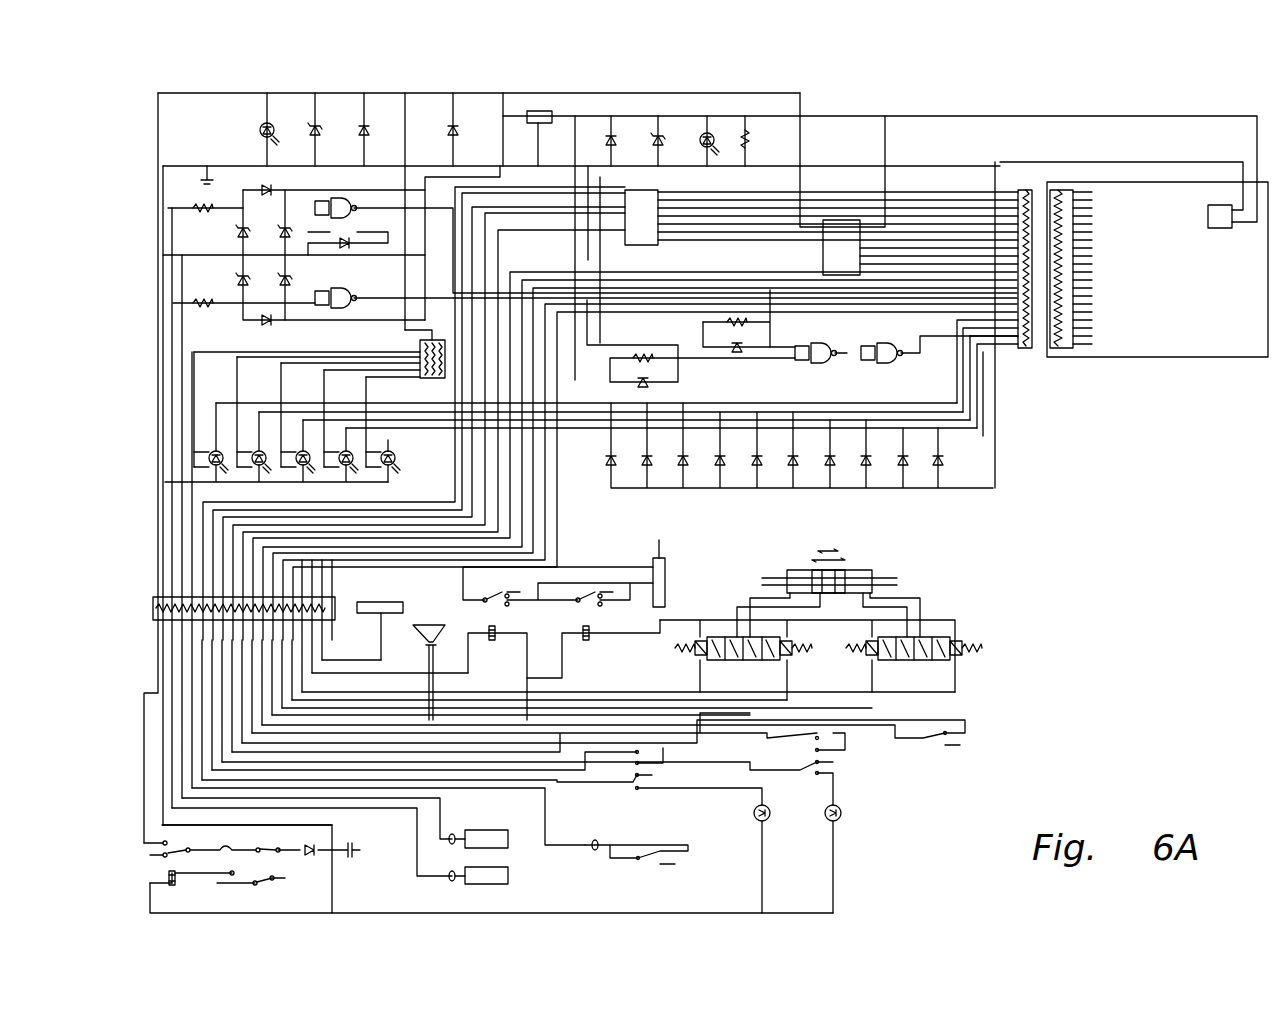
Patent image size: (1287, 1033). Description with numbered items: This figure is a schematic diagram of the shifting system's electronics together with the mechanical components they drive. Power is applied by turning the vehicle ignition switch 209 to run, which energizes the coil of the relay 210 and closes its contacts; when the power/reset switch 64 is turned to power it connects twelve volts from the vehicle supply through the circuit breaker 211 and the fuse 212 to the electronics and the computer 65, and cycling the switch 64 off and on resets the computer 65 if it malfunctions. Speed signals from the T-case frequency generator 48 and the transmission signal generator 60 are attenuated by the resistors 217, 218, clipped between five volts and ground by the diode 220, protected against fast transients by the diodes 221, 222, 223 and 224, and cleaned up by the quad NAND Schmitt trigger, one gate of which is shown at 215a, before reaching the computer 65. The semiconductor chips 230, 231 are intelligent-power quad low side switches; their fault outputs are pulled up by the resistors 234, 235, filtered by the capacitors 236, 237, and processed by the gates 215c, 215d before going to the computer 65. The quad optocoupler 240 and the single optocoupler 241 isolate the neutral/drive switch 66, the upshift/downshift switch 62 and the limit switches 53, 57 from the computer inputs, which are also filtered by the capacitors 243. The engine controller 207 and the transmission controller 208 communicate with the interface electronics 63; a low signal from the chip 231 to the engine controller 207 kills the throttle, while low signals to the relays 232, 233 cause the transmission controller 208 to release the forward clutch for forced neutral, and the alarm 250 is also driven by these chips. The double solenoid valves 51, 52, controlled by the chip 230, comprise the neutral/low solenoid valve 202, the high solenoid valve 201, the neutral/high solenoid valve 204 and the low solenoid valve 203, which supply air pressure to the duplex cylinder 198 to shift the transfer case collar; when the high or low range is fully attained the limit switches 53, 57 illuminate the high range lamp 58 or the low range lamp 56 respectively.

The fuse 212 is at (207, 93).
The semiconductor chip 230 is at (633, 190).
The semiconductor chip 231 is at (843, 220).
The computer 65 is at (1058, 178).
The resistor 217 is at (196, 208).
The diode 223 is at (238, 232).
The diode 222 is at (238, 280).
The resistor 218 is at (196, 303).
The diode 224 is at (272, 190).
The NAND Schmitt trigger gate 215a is at (320, 208).
The diode 220 is at (290, 280).
The diode 221 is at (260, 322).
The resistor 234 is at (730, 322).
The resistor 235 is at (643, 354).
The capacitor 236 is at (737, 352).
The capacitor 237 is at (648, 384).
The NAND Schmitt trigger gate 215c is at (800, 343).
The NAND Schmitt trigger gate 215d is at (862, 363).
The capacitors 243 is at (847, 420).
The quad optocoupler 240 is at (338, 450).
The single optocoupler 241 is at (397, 453).
The interface electronics 63 is at (153, 606).
The engine controller 207 is at (400, 602).
The alarm 250 is at (420, 625).
The relay 232 is at (508, 634).
The relay 233 is at (590, 640).
The transmission controller 208 is at (663, 558).
The double solenoid valve 51 is at (762, 553).
The duplex cylinder 198 is at (852, 568).
The double solenoid valve 52 is at (922, 571).
The neutral/low solenoid valve 202 is at (700, 660).
The high solenoid valve 201 is at (786, 660).
The neutral/high solenoid valve 204 is at (872, 660).
The low solenoid valve 203 is at (960, 660).
The neutral/drive switch 66 is at (941, 752).
The limit switch 53 is at (862, 776).
The low range lamp 56 is at (841, 816).
The limit switch 57 is at (631, 798).
The high range lamp 58 is at (754, 813).
The transmission signal generator 60 is at (478, 830).
The frequency generator 48 is at (492, 884).
The upshift/downshift switch 62 is at (651, 875).
The power/reset switch 64 is at (325, 865).
The circuit breaker 211 is at (205, 850).
The relay 210 is at (170, 878).
The vehicle ignition switch 209 is at (238, 885).